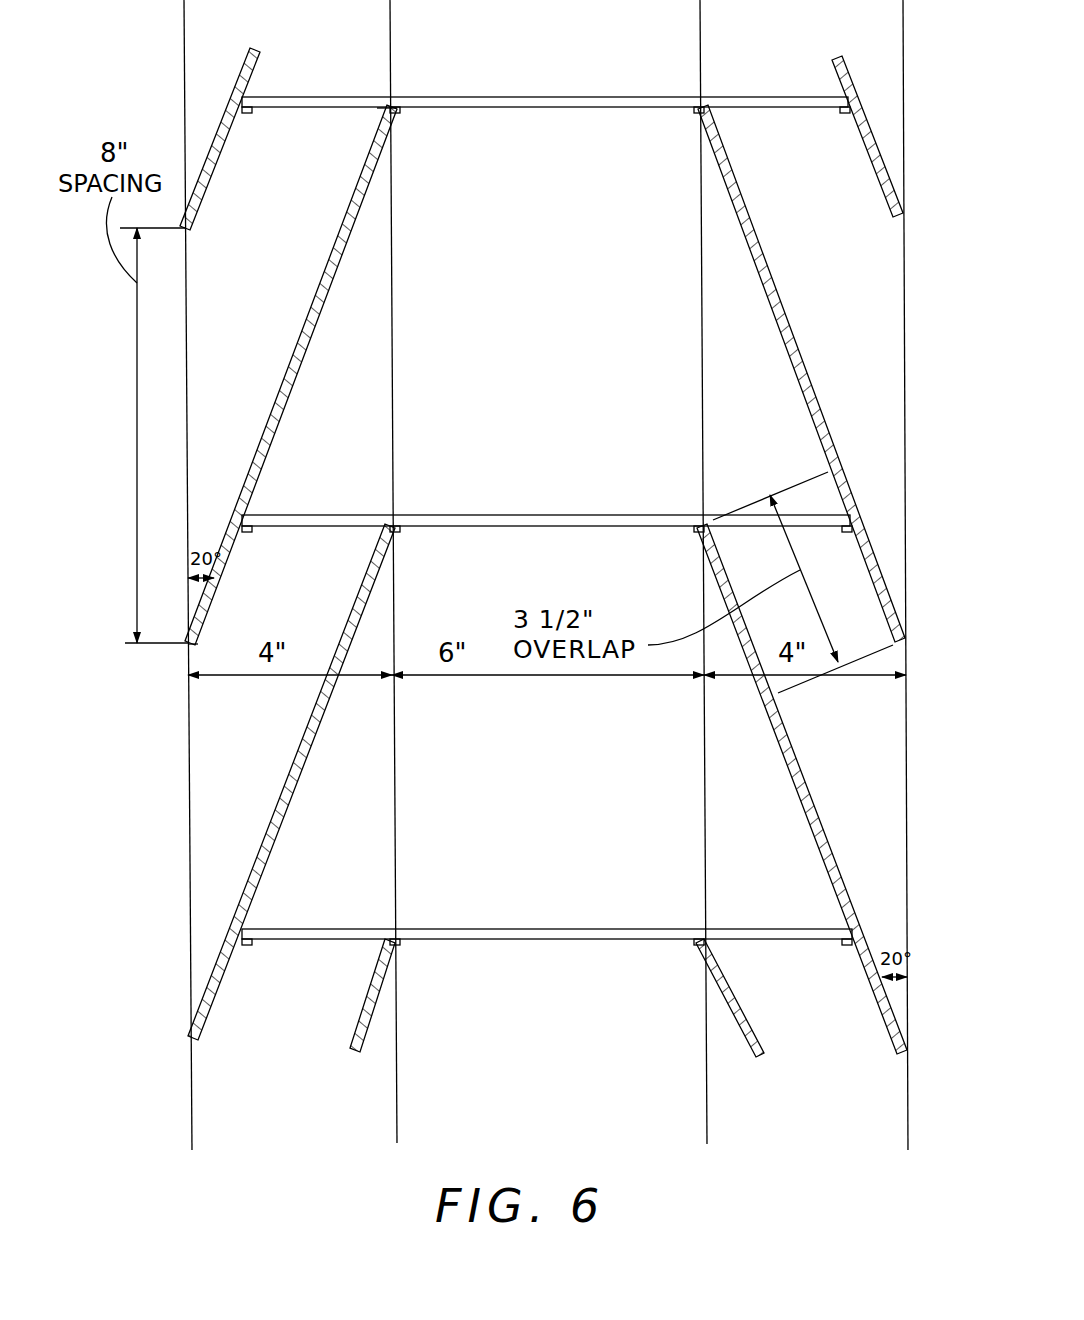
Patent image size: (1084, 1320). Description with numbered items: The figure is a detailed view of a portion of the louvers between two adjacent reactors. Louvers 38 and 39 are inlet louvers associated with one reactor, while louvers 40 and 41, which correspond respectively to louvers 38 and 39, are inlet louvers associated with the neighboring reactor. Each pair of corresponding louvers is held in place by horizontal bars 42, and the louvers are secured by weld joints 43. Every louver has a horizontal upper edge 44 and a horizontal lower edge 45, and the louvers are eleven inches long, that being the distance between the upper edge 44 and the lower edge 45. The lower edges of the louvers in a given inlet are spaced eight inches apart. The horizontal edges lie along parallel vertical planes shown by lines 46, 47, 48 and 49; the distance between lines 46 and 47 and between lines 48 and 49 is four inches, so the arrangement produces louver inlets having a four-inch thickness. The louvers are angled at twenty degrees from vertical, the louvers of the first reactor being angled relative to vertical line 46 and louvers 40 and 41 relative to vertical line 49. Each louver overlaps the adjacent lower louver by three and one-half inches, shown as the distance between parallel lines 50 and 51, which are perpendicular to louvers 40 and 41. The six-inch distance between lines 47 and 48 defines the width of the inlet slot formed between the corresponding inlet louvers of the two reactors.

The inlet louver 38 is at (275, 847).
The inlet louver 39 is at (312, 340).
The inlet louver 40 is at (814, 830).
The inlet louver 41 is at (797, 318).
The horizontal bar 42 is at (517, 97).
The weld joint 43 is at (247, 110).
The horizontal upper edge 44 is at (380, 110).
The horizontal lower edge 45 is at (195, 645).
The vertical line 46 is at (190, 855).
The vertical line 47 is at (395, 843).
The vertical line 48 is at (705, 843).
The vertical line 49 is at (907, 843).
The parallel line 50 is at (858, 658).
The parallel line 51 is at (778, 490).